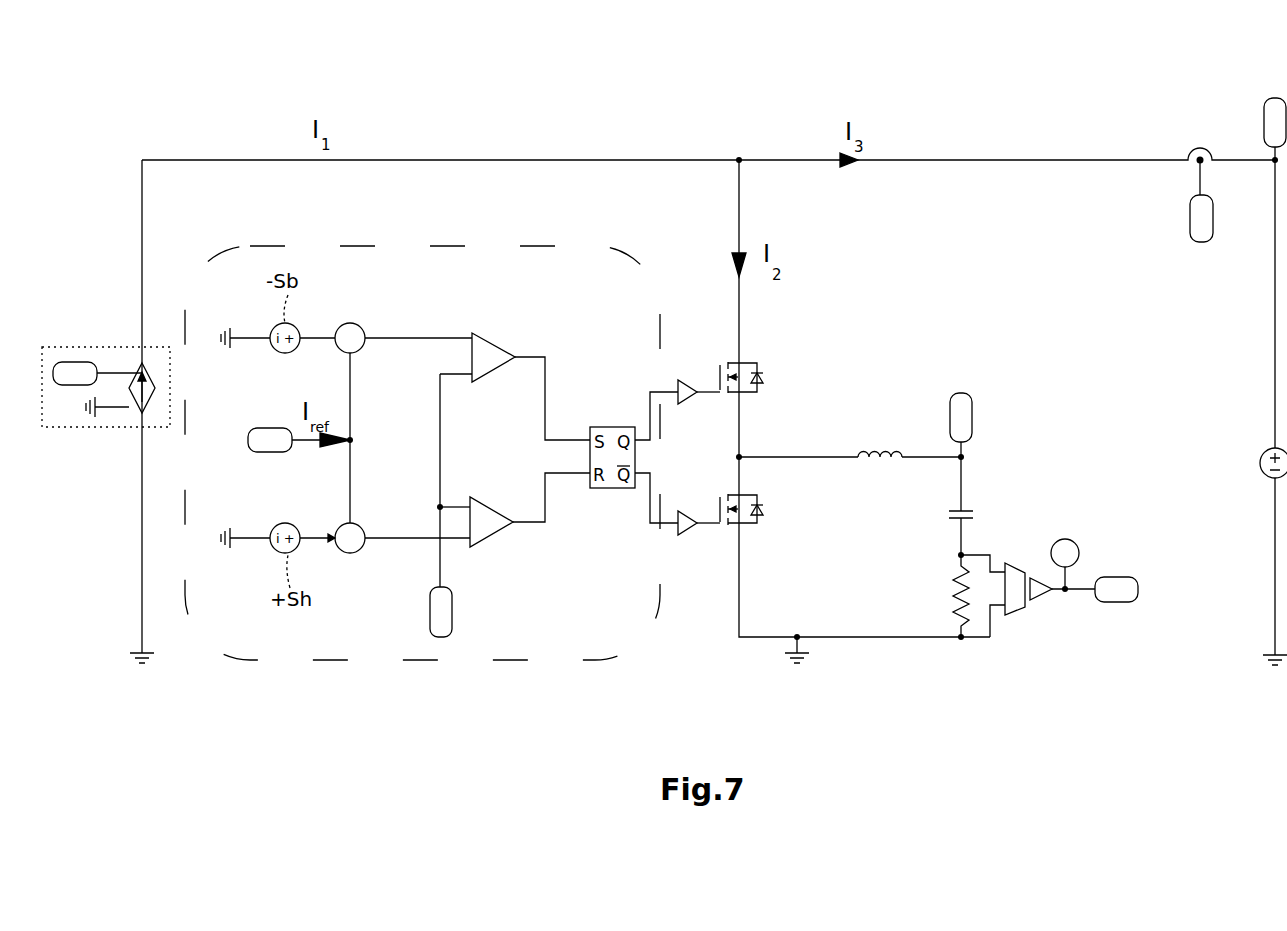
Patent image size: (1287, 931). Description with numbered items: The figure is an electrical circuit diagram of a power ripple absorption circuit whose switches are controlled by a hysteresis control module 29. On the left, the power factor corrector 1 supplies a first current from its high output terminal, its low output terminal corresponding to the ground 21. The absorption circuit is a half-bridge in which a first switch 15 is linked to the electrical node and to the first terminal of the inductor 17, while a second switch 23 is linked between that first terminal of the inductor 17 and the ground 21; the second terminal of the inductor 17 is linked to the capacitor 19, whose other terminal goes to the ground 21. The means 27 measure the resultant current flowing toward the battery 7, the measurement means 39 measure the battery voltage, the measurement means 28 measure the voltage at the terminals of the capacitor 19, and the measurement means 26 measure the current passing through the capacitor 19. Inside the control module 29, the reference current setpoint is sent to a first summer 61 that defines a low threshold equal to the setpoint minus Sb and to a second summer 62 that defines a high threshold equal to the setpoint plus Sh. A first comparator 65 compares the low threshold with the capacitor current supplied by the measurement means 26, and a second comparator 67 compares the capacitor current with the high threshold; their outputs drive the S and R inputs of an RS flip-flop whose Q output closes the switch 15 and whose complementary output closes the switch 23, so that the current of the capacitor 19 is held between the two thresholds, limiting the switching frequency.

The power factor corrector 1 is at (112, 350).
The battery 7 is at (1258, 460).
The first switch 15 is at (782, 376).
The inductor 17 is at (893, 440).
The capacitor 19 is at (975, 517).
The ground 21 is at (150, 660).
The second switch 23 is at (782, 512).
The measurement means 26 is at (455, 615).
The means which measure a first current 27 is at (1185, 216).
The measurement means 28 is at (975, 408).
The control module 29 is at (498, 665).
The measurement means 39 is at (1263, 120).
The first summer 61 is at (360, 325).
The second summer 62 is at (352, 556).
The first comparator 65 is at (500, 344).
The second comparator 67 is at (498, 532).